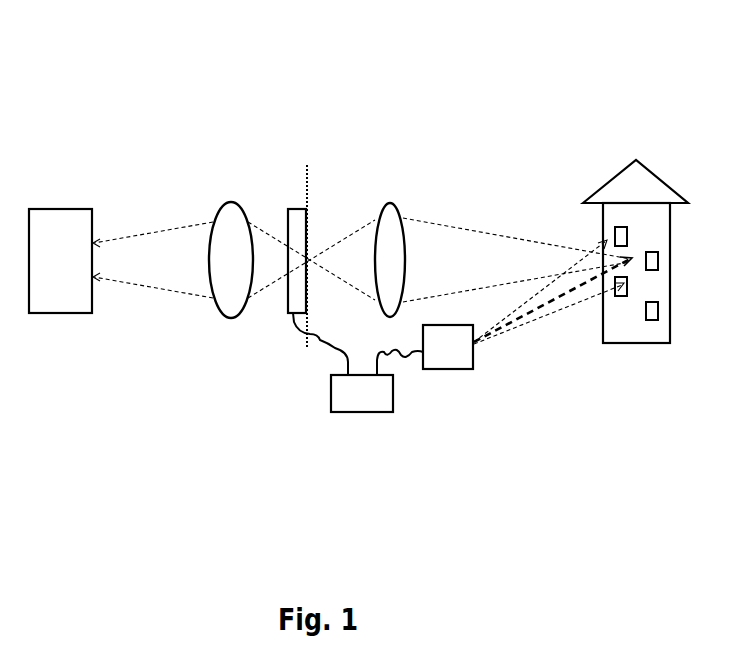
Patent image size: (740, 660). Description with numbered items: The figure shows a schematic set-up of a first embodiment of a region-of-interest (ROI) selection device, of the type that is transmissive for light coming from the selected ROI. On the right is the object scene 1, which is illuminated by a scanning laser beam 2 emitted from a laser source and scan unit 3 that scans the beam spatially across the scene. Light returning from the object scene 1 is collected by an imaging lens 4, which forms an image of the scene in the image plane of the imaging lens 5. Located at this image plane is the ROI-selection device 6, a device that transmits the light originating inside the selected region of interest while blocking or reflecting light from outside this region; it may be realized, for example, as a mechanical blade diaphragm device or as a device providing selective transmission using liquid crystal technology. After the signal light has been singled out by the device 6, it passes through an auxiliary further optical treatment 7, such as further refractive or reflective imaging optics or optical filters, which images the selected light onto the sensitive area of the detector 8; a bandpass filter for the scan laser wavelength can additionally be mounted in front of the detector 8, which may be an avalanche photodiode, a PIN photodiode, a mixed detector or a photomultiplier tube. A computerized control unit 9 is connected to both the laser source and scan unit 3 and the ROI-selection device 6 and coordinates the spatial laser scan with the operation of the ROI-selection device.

The object scene 1 is at (627, 332).
The scanning laser beam 2 is at (553, 307).
The laser source and scan unit 3 is at (457, 373).
The imaging lens 4 is at (400, 203).
The image plane of imaging lens 5 is at (313, 177).
The device transmitting the light inside of selected region of interest 6 is at (283, 308).
The auxiliary further optical treatment of selected light 7 is at (213, 312).
The detector 8 is at (98, 303).
The computerized control unit 9 is at (368, 387).